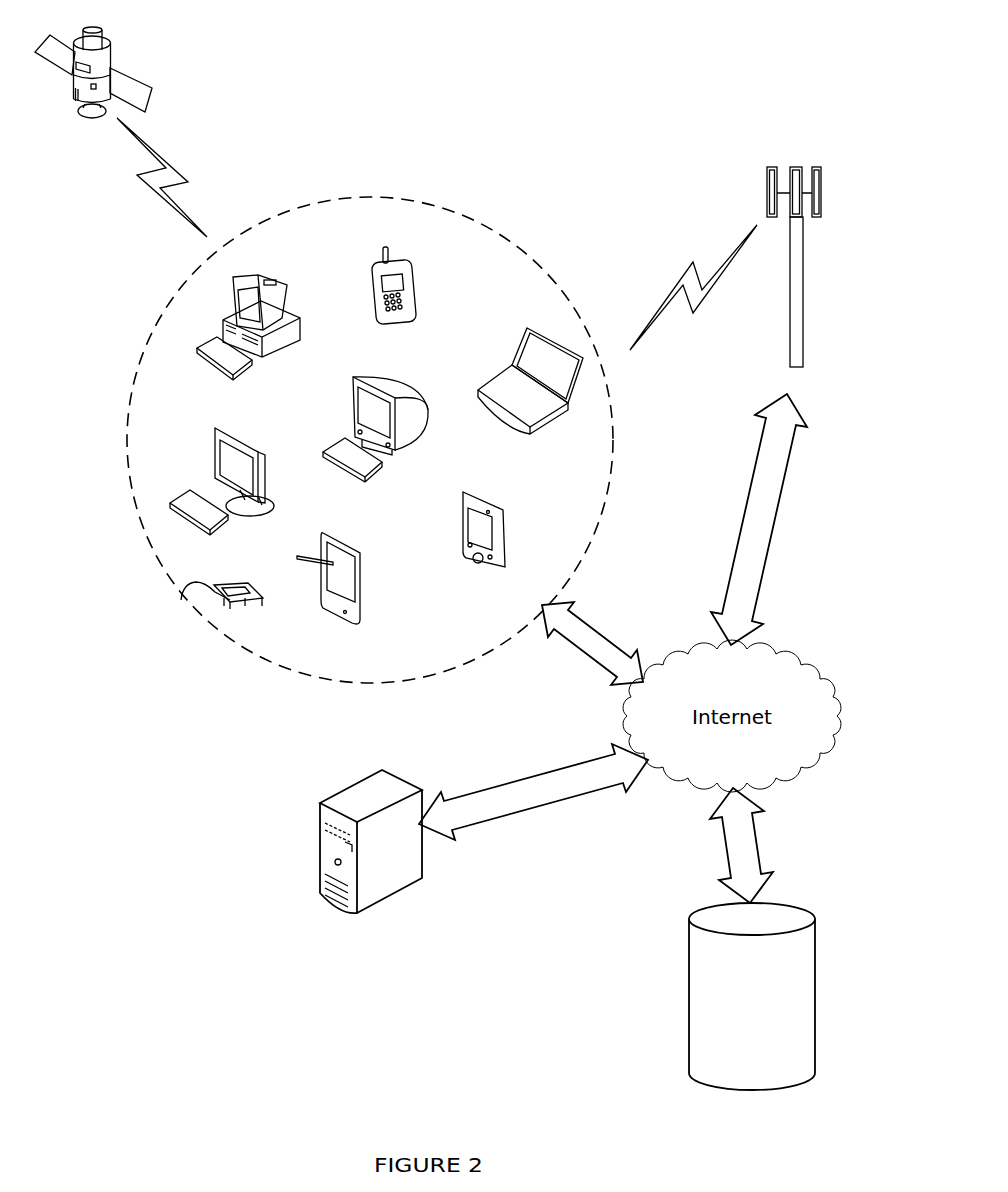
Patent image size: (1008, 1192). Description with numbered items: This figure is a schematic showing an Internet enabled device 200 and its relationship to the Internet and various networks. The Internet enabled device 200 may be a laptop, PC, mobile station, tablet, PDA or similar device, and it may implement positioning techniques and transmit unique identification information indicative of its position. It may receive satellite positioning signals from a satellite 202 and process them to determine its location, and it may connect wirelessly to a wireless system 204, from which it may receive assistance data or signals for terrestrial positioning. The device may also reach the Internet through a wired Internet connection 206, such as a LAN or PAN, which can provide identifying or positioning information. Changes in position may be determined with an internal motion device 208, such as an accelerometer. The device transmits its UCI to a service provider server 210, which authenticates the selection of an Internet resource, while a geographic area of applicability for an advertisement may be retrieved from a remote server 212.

The Internet enabled device 200 is at (570, 578).
The satellite 202 is at (112, 60).
The wireless system 204 is at (832, 229).
The wired Internet connection 206 is at (597, 627).
The internal motion device 208 is at (183, 590).
The service provider server 210 is at (752, 996).
The remote server 212 is at (383, 892).